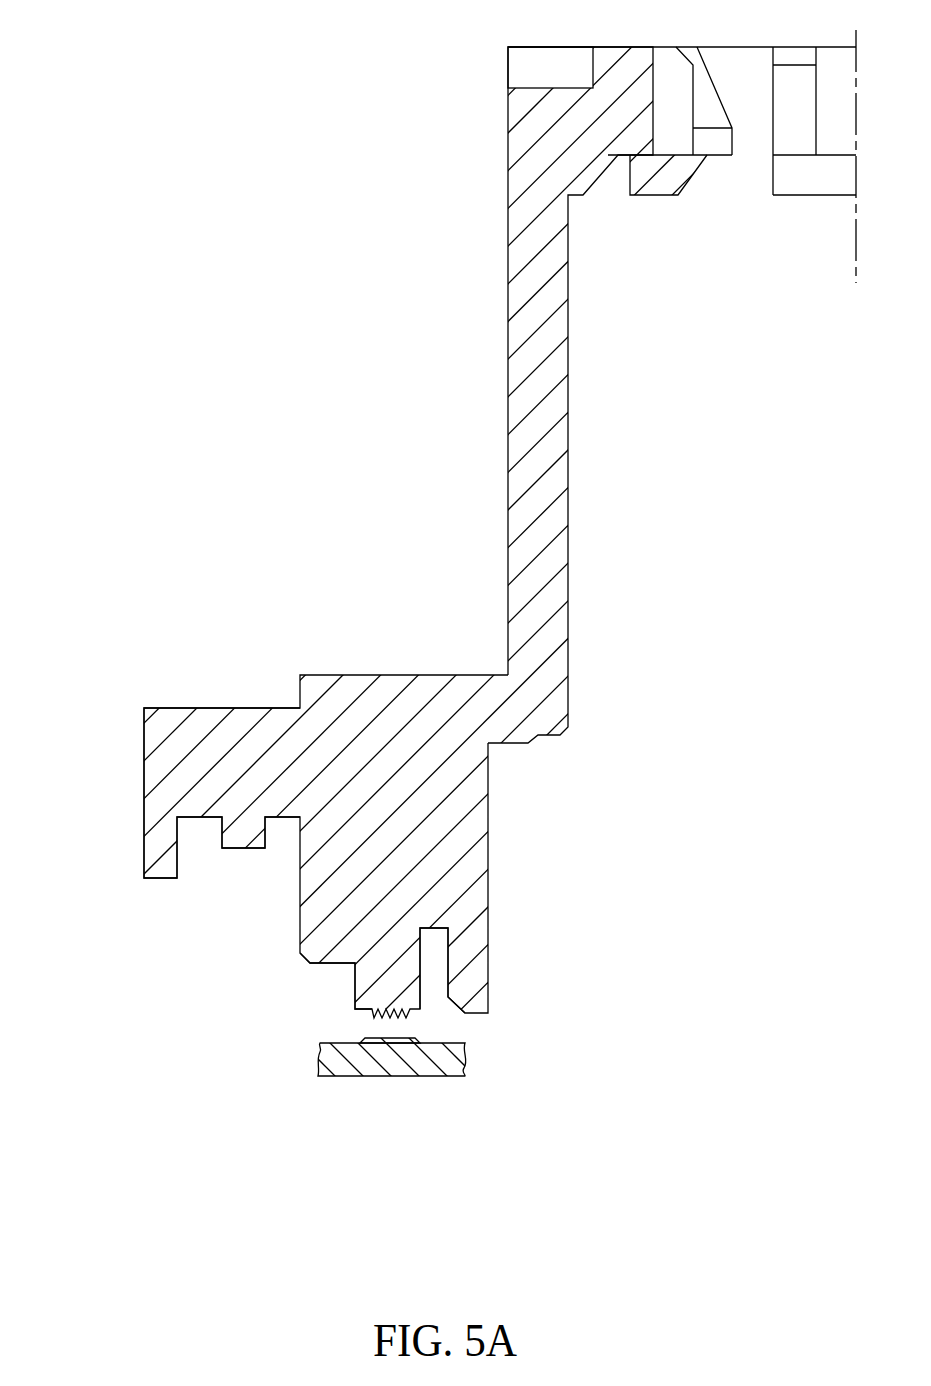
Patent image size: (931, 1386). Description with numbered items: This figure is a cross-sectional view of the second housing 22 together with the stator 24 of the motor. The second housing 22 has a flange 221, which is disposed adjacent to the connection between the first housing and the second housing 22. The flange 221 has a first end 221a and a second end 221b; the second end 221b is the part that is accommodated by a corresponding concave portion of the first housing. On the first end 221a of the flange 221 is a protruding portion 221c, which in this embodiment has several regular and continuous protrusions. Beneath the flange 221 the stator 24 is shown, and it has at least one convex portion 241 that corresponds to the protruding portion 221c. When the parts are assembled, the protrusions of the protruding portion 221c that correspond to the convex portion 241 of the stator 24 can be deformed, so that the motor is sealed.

The second housing 22 is at (530, 362).
The flange 221 is at (397, 697).
The first end 221a is at (365, 968).
The second end 221b is at (210, 757).
The protruding portion 221c is at (413, 1013).
The stator 24 is at (384, 1056).
The convex portion 241 is at (365, 1038).